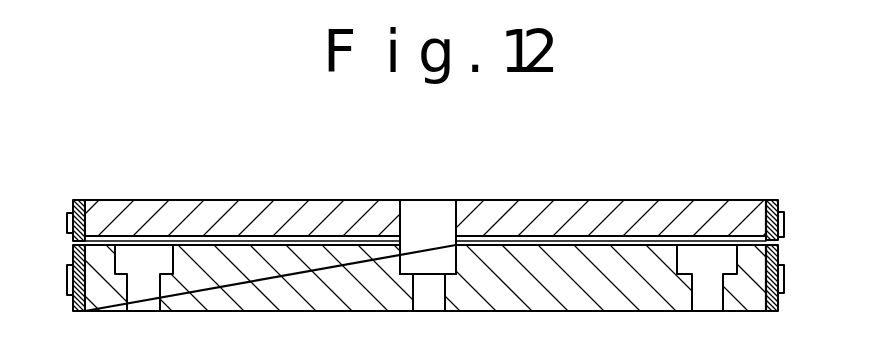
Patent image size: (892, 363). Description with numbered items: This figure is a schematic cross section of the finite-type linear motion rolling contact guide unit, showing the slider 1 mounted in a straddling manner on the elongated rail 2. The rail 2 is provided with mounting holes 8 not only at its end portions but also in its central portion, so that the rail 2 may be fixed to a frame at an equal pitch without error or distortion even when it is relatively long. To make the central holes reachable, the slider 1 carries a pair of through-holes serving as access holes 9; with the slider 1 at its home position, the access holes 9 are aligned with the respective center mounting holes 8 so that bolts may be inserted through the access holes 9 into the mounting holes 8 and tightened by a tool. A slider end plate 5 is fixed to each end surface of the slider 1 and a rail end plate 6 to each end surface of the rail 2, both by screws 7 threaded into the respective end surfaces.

The slider 1 is at (257, 208).
The rail 2 is at (281, 298).
The slider end plate 5 is at (775, 199).
The rail end plate 6 is at (781, 311).
The screws 7 is at (785, 221).
The mounting holes 8 is at (145, 298).
The access holes 9 is at (440, 200).